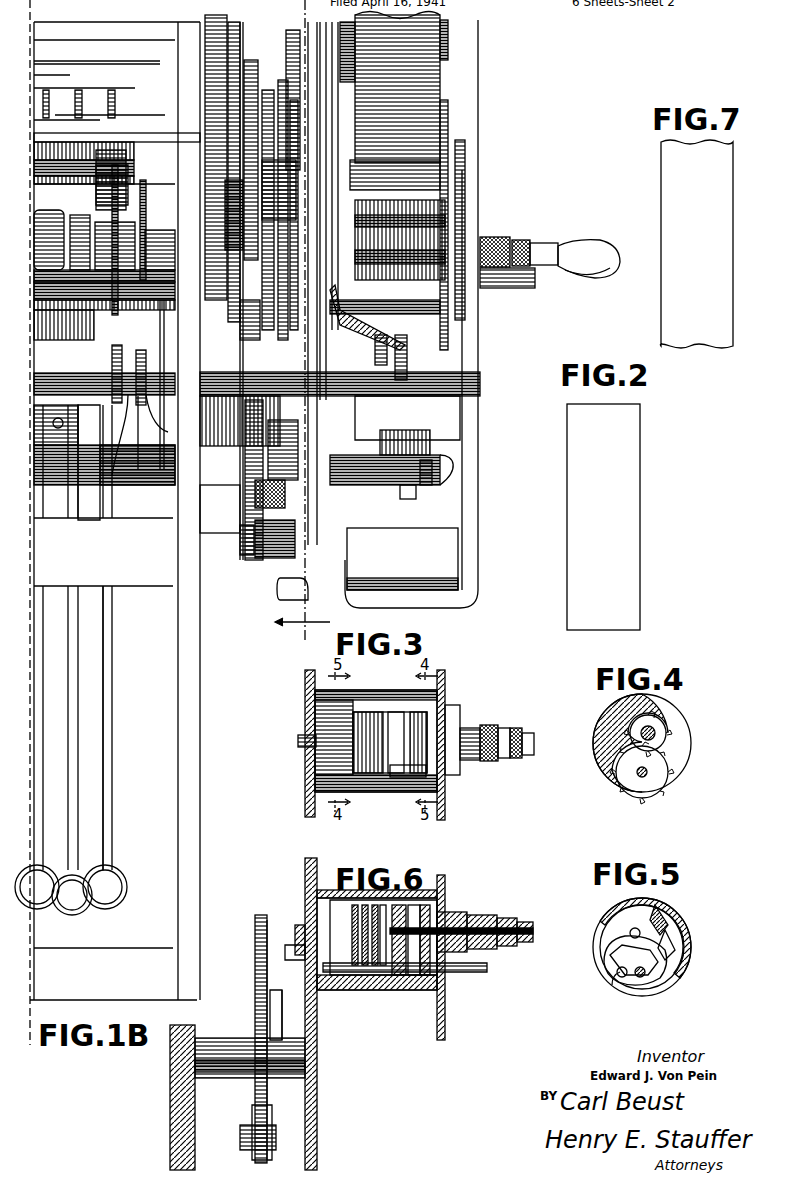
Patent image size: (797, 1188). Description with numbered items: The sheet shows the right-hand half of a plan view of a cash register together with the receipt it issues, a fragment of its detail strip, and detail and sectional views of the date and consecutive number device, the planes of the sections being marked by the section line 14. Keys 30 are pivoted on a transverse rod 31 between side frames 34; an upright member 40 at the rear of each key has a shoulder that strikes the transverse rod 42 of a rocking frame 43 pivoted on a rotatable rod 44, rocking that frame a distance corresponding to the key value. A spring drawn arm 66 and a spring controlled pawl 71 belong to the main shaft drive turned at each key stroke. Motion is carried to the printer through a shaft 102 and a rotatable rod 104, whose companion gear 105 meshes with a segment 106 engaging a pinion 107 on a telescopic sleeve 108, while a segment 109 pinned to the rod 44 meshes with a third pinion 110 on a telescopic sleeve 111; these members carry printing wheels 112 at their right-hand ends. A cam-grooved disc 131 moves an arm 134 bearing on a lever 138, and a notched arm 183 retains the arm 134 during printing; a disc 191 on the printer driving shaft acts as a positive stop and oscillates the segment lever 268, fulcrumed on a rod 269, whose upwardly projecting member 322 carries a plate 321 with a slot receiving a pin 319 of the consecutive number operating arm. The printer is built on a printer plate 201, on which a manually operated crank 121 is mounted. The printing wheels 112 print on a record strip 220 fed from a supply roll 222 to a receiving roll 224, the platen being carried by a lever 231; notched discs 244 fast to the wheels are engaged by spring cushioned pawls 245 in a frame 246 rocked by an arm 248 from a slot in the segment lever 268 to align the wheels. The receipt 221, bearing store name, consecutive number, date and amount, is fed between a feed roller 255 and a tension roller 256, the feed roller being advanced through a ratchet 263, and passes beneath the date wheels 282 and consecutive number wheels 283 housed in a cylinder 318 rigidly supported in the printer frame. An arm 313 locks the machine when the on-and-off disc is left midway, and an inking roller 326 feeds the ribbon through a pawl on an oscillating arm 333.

In FIG. 1B, the section line 14 is at (260, 16).
In FIG. 1B, the keys 30 is at (108, 778).
In FIG. 1B, the transverse rod 31 is at (144, 485).
In FIG. 1B, the side frames 34 is at (180, 905).
In FIG. 1B, the upright member 40 is at (122, 138).
In FIG. 1B, the transverse rod 42 is at (124, 160).
In FIG. 1B, the rocking frame 43 is at (120, 192).
In FIG. 1B, the transverse rod 44 is at (168, 248).
In FIG. 1B, the spring drawn arm 66 is at (168, 290).
In FIG. 1B, the spring controlled pawl 71 is at (166, 364).
In FIG. 1B, the shaft 102 is at (66, 362).
In FIG. 1B, the rotatable rod 104 is at (64, 325).
In FIG. 1B, the companion gear 105 is at (114, 352).
In FIG. 1B, the segment 106 is at (112, 200).
In FIG. 1B, the pinion 107 is at (128, 435).
In FIG. 1B, the telescopic sleeve 108 is at (141, 362).
In FIG. 1B, the segment 109 is at (146, 190).
In FIG. 1B, the third pinion 110 is at (175, 421).
In FIG. 1B, the telescopic sleeve 111 is at (246, 376).
In FIG. 1B, the printing wheels 112 is at (398, 438).
In FIG. 1B, the manually operated crank 121 is at (565, 268).
In FIG. 1B, the disc 131 is at (238, 290).
In FIG. 1B, the arm 134 is at (250, 338).
In FIG. 1B, the lever 138 is at (220, 509).
In FIG. 1B, the arm 183 is at (240, 540).
In FIG. 1B, the disc 191 is at (220, 144).
In FIG. 1B, the printer plate 201 is at (330, 500).
In FIG. 3, the printer plate 201 is at (306, 782).
In FIG. 6, the printer plate 201 is at (304, 880).
In FIG. 7, the record strip 220 is at (665, 208).
In FIG. 2, the issuing receipt strip 221 is at (636, 513).
In FIG. 1B, the supply roll 222 is at (428, 95).
In FIG. 1B, the receiving roll 224 is at (404, 180).
In FIG. 1B, the lever 231 is at (372, 318).
In FIG. 1B, the notched discs 244 is at (410, 350).
In FIG. 1B, the spring cushioned pawls 245 is at (405, 212).
In FIG. 1B, the frame 246 is at (420, 320).
In FIG. 1B, the arm 248 is at (262, 210).
In FIG. 1B, the feed roller 255 is at (405, 500).
In FIG. 1B, the tension roller 256 is at (424, 488).
In FIG. 1B, the ratchet 263 is at (290, 445).
In FIG. 1B, the segment lever 268 is at (245, 480).
In FIG. 6, the segment lever 268 is at (258, 1012).
In FIG. 6, the rod 269 is at (248, 1082).
In FIG. 1B, the date wheels 282 is at (271, 494).
In FIG. 3, the date wheels 282 is at (410, 793).
In FIG. 4, the date wheels 282 is at (622, 792).
In FIG. 6, the date wheels 282 is at (412, 1000).
In FIG. 3, the consecutive number wheels 283 is at (370, 712).
In FIG. 6, the consecutive number wheels 283 is at (366, 1000).
In FIG. 1B, the arm 313 is at (256, 565).
In FIG. 3, the cylinder 318 is at (450, 770).
In FIG. 4, the cylinder 318 is at (608, 724).
In FIG. 5, the cylinder 318 is at (608, 922).
In FIG. 6, the cylinder 318 is at (455, 905).
In FIG. 3, the pin 319 is at (300, 755).
In FIG. 5, the pin 319 is at (625, 990).
In FIG. 6, the pin 319 is at (296, 960).
In FIG. 6, the plate 321 is at (282, 985).
In FIG. 1B, the upwardly projecting member 322 is at (264, 88).
In FIG. 1B, the inking roller 326 is at (425, 32).
In FIG. 1B, the arm 333 is at (400, 28).